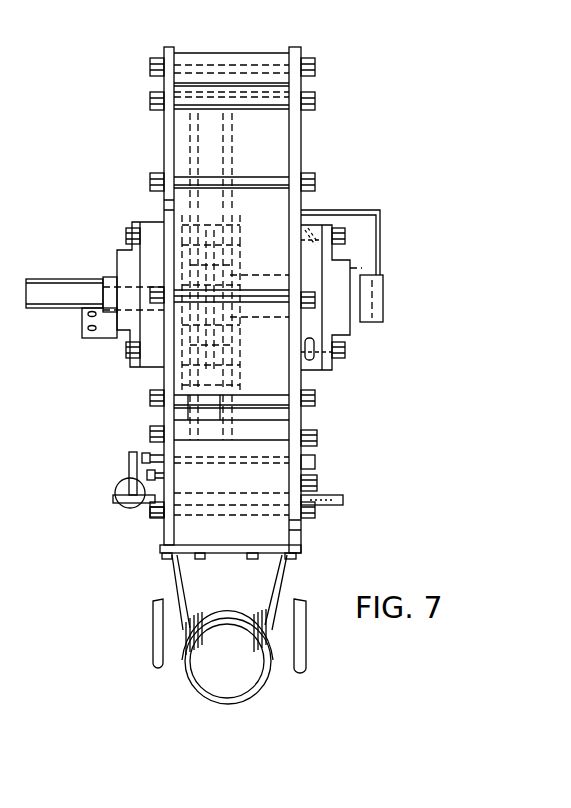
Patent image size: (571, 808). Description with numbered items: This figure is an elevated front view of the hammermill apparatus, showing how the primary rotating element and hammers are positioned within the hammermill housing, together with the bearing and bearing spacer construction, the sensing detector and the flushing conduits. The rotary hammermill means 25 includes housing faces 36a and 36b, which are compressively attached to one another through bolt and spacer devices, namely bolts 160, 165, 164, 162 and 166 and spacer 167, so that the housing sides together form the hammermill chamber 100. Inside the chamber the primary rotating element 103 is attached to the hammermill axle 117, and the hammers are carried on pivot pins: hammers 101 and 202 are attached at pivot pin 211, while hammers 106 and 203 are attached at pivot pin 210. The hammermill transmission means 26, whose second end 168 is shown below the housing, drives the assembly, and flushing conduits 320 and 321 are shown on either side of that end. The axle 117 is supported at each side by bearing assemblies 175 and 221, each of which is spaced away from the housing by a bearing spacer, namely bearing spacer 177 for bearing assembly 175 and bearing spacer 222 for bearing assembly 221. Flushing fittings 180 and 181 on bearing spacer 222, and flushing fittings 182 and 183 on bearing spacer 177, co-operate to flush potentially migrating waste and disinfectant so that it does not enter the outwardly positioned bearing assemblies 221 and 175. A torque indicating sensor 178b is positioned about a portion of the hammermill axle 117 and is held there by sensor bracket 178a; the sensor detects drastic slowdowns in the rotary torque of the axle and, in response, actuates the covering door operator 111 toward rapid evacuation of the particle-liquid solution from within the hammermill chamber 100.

The rotary hammermill means 25 is at (333, 471).
The hammermill transmission means 26 is at (258, 580).
The housing face 36a is at (288, 420).
The housing face 36b is at (163, 535).
The chamber 100 is at (264, 137).
The hammer 101 is at (229, 117).
The primary rotating element 103 is at (190, 262).
The hammer 106 is at (292, 438).
The covering door operator 111 is at (125, 505).
The hammermill axle 117 is at (43, 300).
The bolt 160 is at (308, 66).
The bolt 162 is at (350, 268).
The bolt 164 is at (307, 184).
The bolt 165 is at (312, 104).
The bolt 166 is at (307, 393).
The spacer 167 is at (298, 533).
The second end 168 is at (258, 688).
The bearing assembly 175 is at (130, 267).
The bearing spacer 177 is at (163, 210).
The sensor bracket 178a is at (382, 236).
The torque indicating sensor 178b is at (385, 297).
The flushing fitting 180 is at (308, 258).
The flushing fitting 181 is at (342, 353).
The flushing fitting 182 is at (135, 237).
The flushing fitting 183 is at (128, 350).
The hammer 202 is at (190, 127).
The hammer 203 is at (190, 430).
The pivot pin 210 is at (210, 338).
The pivot pin 211 is at (186, 227).
The bearing assembly 221 is at (345, 323).
The bearing spacer 222 is at (308, 290).
The flushing conduit 320 is at (155, 665).
The flushing conduit 321 is at (302, 668).